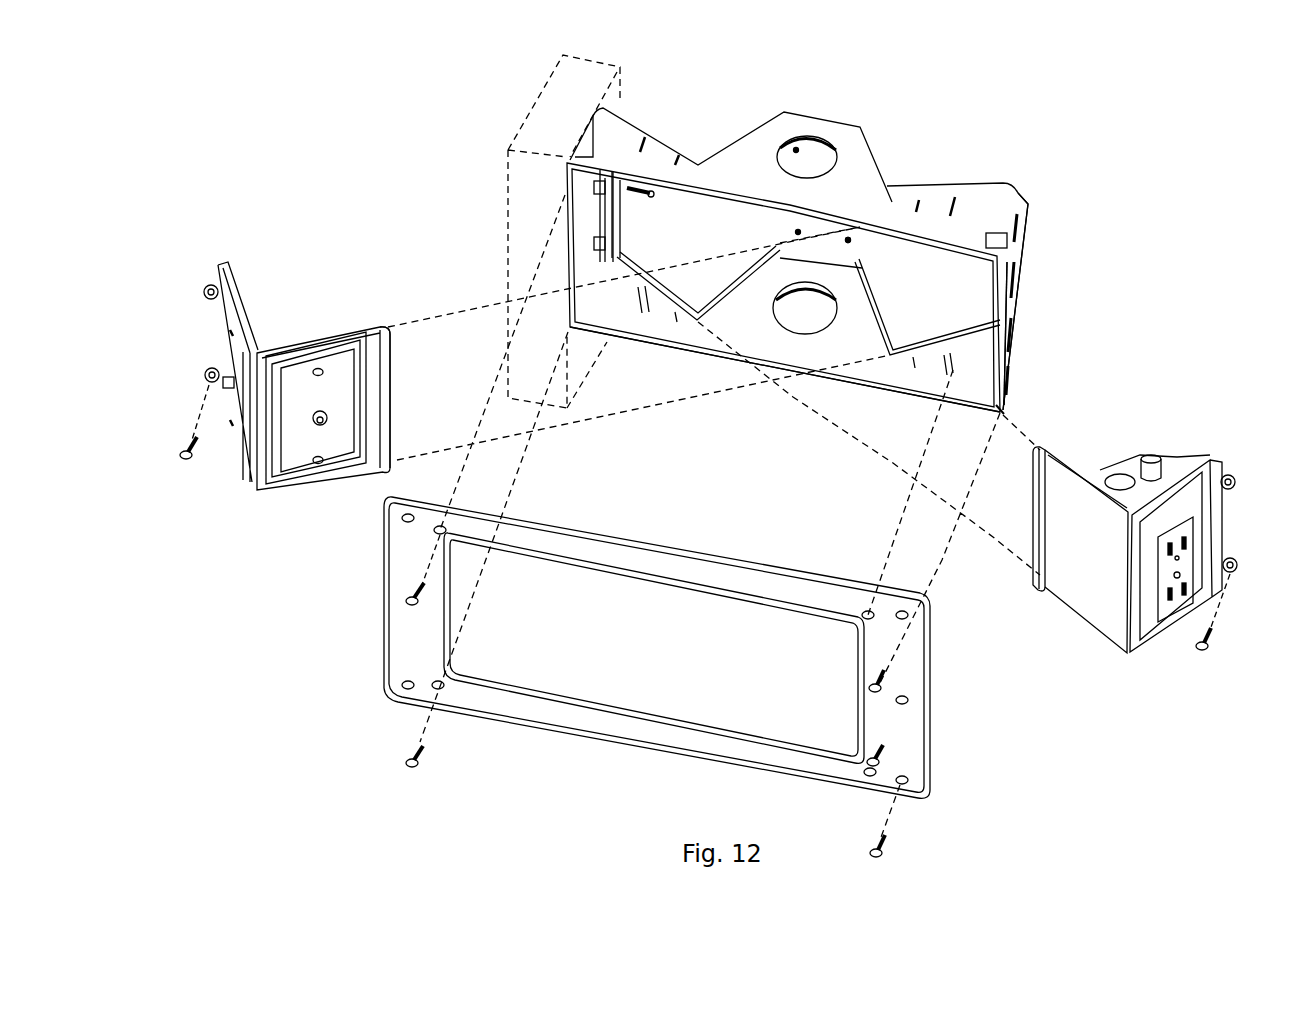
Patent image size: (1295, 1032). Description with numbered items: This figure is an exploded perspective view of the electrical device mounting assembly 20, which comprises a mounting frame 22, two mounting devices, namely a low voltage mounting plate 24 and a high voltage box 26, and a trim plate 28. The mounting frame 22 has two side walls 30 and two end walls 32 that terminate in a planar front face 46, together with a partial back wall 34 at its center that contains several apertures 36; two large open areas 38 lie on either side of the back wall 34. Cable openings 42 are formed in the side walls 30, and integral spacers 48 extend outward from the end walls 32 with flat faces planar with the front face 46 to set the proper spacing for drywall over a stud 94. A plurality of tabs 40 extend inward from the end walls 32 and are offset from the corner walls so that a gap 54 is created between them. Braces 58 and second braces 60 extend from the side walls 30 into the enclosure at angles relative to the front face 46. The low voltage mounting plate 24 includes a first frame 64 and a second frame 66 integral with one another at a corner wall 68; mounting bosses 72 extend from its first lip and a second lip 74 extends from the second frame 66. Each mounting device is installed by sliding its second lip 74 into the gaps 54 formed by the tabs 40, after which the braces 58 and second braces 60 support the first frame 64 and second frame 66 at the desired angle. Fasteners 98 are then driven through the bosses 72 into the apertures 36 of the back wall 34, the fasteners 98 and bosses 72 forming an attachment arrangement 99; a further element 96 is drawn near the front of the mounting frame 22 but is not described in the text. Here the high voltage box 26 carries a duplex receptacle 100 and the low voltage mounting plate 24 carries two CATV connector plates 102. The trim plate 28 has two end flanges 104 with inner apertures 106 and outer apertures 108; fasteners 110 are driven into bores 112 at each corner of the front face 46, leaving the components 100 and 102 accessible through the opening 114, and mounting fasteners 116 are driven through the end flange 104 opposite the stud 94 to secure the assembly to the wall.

The electrical device mounting assembly 20 is at (366, 158).
The mounting frame 22 is at (1027, 192).
The low voltage mounting plate 24 is at (292, 312).
The high voltage box 26 is at (1078, 657).
The trim plate 28 is at (928, 796).
The side walls 30 is at (774, 357).
The end walls 32 is at (1016, 284).
The back wall 34 is at (809, 257).
The apertures 36 is at (851, 241).
The open areas 38 is at (687, 247).
The tabs 40 is at (594, 188).
The cable openings 42 is at (797, 169).
The front face 46 is at (843, 387).
The integral spacers 48 is at (1022, 240).
The gap 54 is at (600, 168).
The braces 58 is at (742, 295).
The second braces 60 is at (672, 305).
The first frame 64 is at (240, 290).
The second frame 66 is at (318, 483).
The corner wall 68 is at (603, 212).
The mounting bosses 72 is at (206, 286).
The second lip 74 is at (390, 462).
The stud 94 is at (598, 82).
The fastener 96 is at (652, 196).
The fasteners 98 is at (188, 463).
The attachment arrangement 99 is at (210, 448).
The duplex receptacle 100 is at (1180, 560).
The CATV connector plates 102 is at (232, 352).
The end flanges 104 is at (397, 553).
The inner apertures 106 is at (440, 690).
The outer apertures 108 is at (402, 690).
The fasteners 110 is at (413, 595).
The bores 112 is at (1003, 412).
The opening 114 is at (640, 662).
The mounting fasteners 116 is at (886, 851).